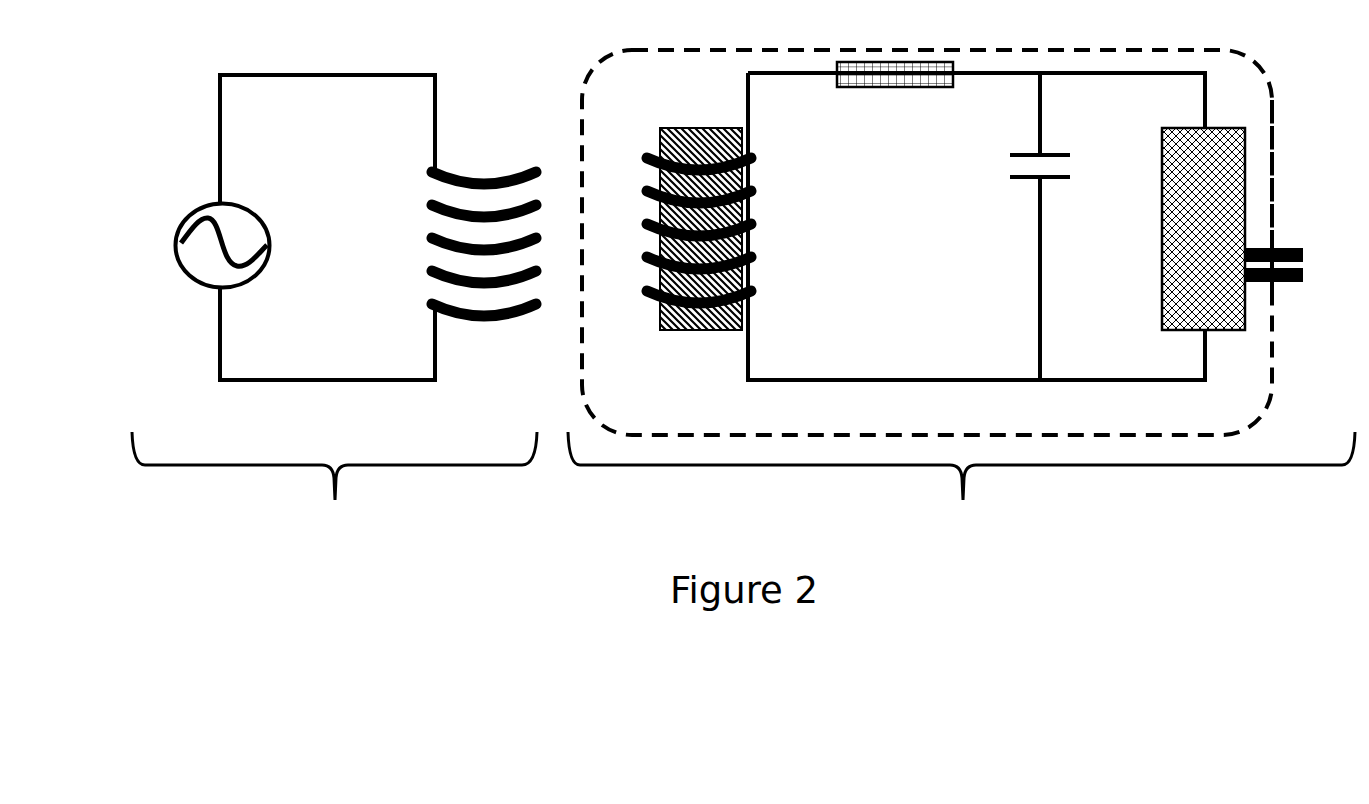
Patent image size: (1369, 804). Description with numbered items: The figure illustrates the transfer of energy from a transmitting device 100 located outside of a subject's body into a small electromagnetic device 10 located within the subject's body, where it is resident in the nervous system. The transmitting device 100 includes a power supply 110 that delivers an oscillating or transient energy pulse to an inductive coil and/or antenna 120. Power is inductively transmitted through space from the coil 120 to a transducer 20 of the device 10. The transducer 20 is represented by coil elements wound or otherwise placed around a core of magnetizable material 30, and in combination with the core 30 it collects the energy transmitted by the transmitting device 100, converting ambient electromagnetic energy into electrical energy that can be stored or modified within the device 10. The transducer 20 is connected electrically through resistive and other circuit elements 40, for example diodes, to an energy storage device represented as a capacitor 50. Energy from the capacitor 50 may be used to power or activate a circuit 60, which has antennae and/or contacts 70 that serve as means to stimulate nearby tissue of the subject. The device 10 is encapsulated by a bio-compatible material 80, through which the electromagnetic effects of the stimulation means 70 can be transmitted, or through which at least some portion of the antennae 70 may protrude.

The device 10 is at (961, 284).
The transducer 20 is at (640, 312).
The core of magnetizable material 30 is at (700, 340).
The resistive and other circuit elements 40 is at (868, 130).
The capacitor 50 is at (1002, 200).
The circuit 60 is at (1147, 300).
The antennae and/or contacts 70 is at (1293, 240).
The bio-compatible material 80 is at (1278, 167).
The transmitting device 100 is at (334, 297).
The power supply 110 is at (192, 288).
The inductive coil and/or antenna 120 is at (485, 335).